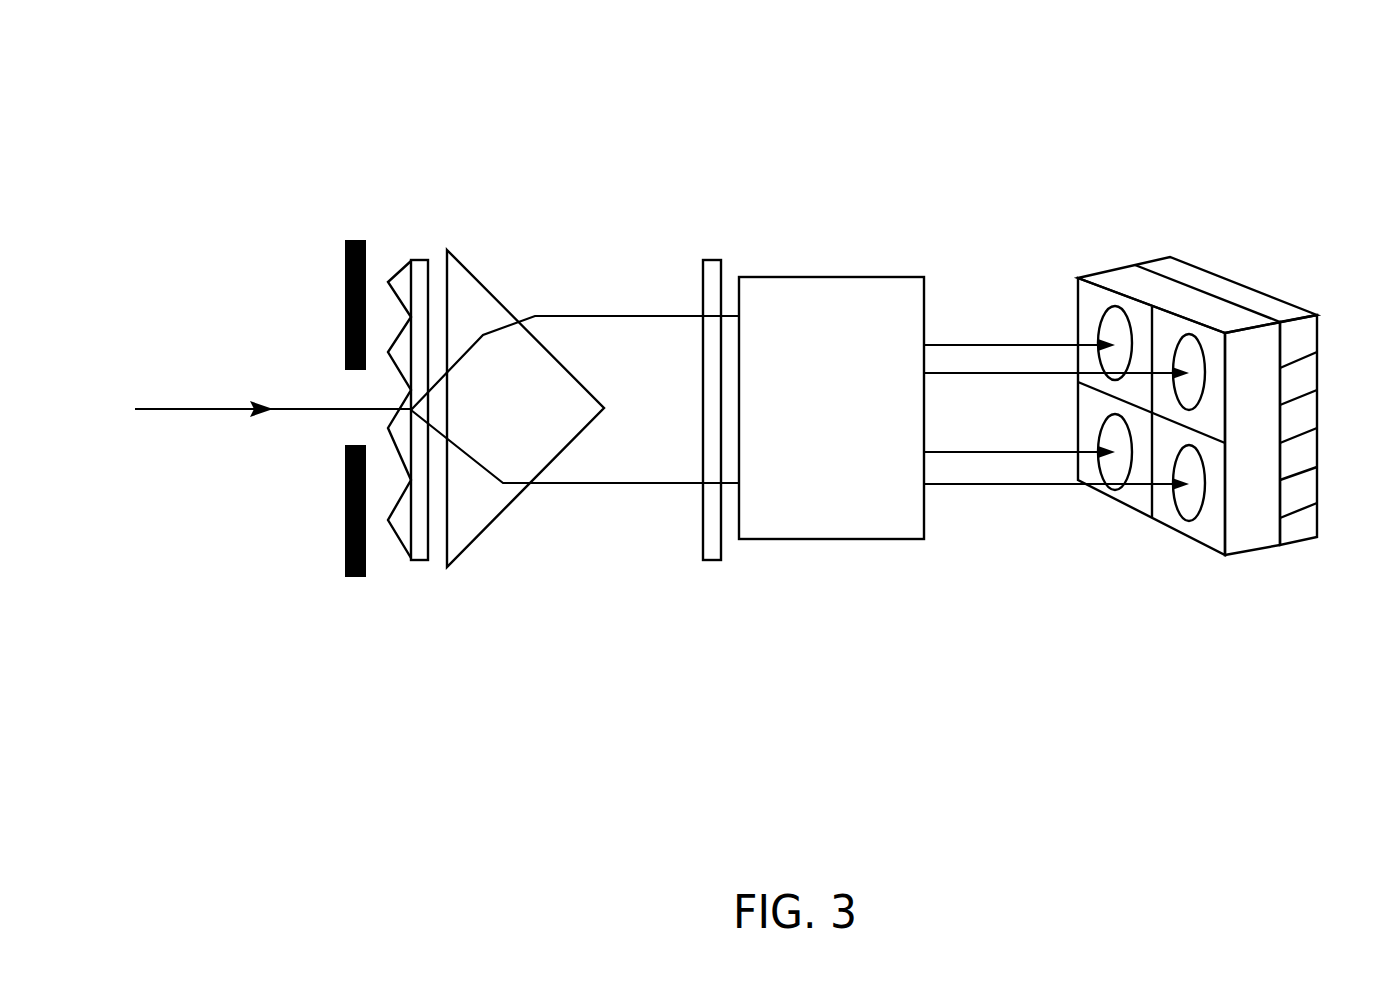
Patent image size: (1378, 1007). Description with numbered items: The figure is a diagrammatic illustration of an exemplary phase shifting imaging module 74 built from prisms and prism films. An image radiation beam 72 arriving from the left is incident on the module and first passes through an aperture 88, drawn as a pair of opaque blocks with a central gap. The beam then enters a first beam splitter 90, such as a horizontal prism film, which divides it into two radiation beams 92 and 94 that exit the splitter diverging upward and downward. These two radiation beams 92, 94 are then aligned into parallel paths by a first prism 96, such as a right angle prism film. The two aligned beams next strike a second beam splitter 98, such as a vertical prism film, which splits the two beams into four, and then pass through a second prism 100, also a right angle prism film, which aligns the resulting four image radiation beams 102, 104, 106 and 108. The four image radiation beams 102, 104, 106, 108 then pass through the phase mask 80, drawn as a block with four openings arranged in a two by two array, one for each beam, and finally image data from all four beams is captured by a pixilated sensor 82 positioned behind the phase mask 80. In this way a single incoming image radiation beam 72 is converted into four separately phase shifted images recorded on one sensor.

The phase shifting imaging module 74 is at (225, 92).
The image radiation beam 72 is at (158, 408).
The aperture 88 is at (355, 240).
The first beam splitter 90 is at (421, 262).
The first prism 96 is at (490, 287).
The radiation beam 92 is at (645, 313).
The radiation beam 94 is at (645, 486).
The second beam splitter 98 is at (712, 561).
The second prism 100 is at (837, 540).
The image radiation beam 102 is at (955, 345).
The image radiation beam 104 is at (1030, 373).
The image radiation beam 106 is at (1040, 485).
The image radiation beam 108 is at (955, 485).
The phase mask 80 is at (1215, 540).
The pixilated sensor 82 is at (1303, 525).